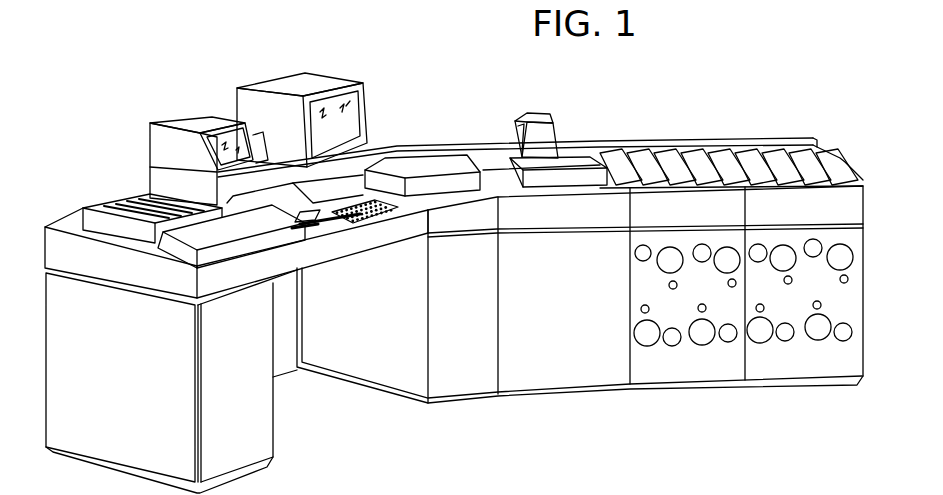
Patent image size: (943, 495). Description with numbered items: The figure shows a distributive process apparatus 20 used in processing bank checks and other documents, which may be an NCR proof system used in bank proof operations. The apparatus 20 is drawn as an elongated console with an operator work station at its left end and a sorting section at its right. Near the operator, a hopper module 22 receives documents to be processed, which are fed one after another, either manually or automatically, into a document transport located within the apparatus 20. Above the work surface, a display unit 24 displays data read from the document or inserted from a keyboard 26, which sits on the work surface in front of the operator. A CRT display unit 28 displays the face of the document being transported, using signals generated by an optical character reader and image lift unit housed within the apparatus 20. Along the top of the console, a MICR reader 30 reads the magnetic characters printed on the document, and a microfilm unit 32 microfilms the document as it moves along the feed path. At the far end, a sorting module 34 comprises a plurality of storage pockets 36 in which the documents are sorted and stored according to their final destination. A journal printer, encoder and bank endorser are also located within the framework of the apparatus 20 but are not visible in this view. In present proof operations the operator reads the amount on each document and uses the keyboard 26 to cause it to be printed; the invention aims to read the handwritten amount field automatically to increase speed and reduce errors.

The distributive process apparatus 20 is at (575, 401).
The hopper module 22 is at (230, 237).
The display unit 24 is at (185, 123).
The keyboard 26 is at (373, 220).
The CRT display unit 28 is at (365, 93).
The MICR reader 30 is at (412, 152).
The microfilm unit 32 is at (543, 113).
The sorting module 34 is at (690, 365).
The storage pockets 36 is at (697, 170).